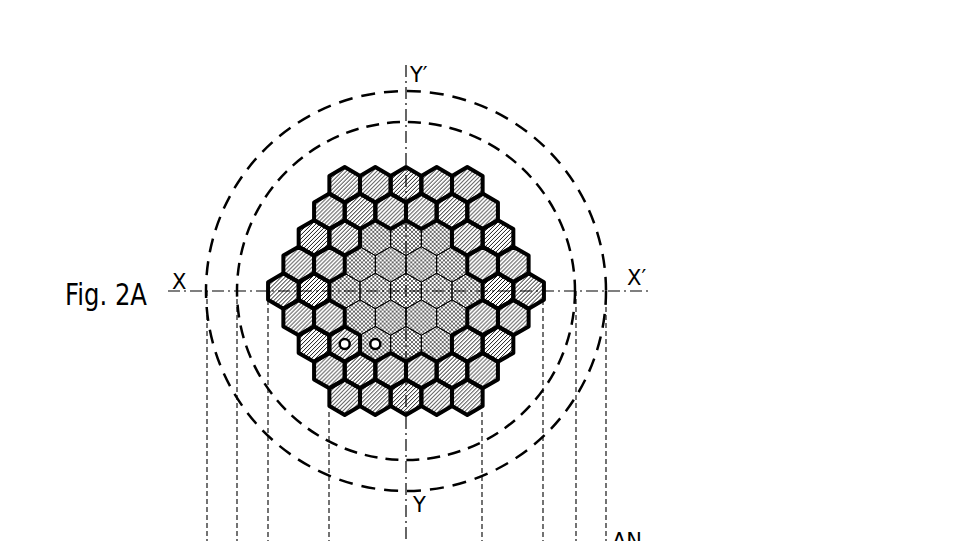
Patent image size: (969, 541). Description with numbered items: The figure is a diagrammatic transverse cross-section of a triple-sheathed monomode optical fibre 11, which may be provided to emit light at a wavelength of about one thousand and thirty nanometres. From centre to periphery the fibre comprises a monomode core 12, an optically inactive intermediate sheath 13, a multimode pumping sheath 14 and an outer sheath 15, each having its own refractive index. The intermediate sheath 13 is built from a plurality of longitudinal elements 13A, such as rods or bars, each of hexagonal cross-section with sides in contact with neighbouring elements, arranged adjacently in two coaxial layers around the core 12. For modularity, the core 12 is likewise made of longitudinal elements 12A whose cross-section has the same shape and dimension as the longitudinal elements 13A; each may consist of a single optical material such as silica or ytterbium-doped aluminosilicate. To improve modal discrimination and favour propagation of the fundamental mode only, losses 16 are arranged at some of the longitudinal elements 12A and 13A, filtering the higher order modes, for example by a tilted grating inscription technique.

The triple-sheathed monomode optical fibre 11 is at (240, 128).
The monomode core 12 is at (456, 261).
The longitudinal elements of the core 12A is at (373, 240).
The intermediate sheath 13 is at (486, 210).
The longitudinal elements of the intermediate sheath 13A is at (342, 187).
The multimode pumping sheath 14 is at (488, 163).
The outer sheath 15 is at (480, 120).
The losses 16 is at (339, 345).